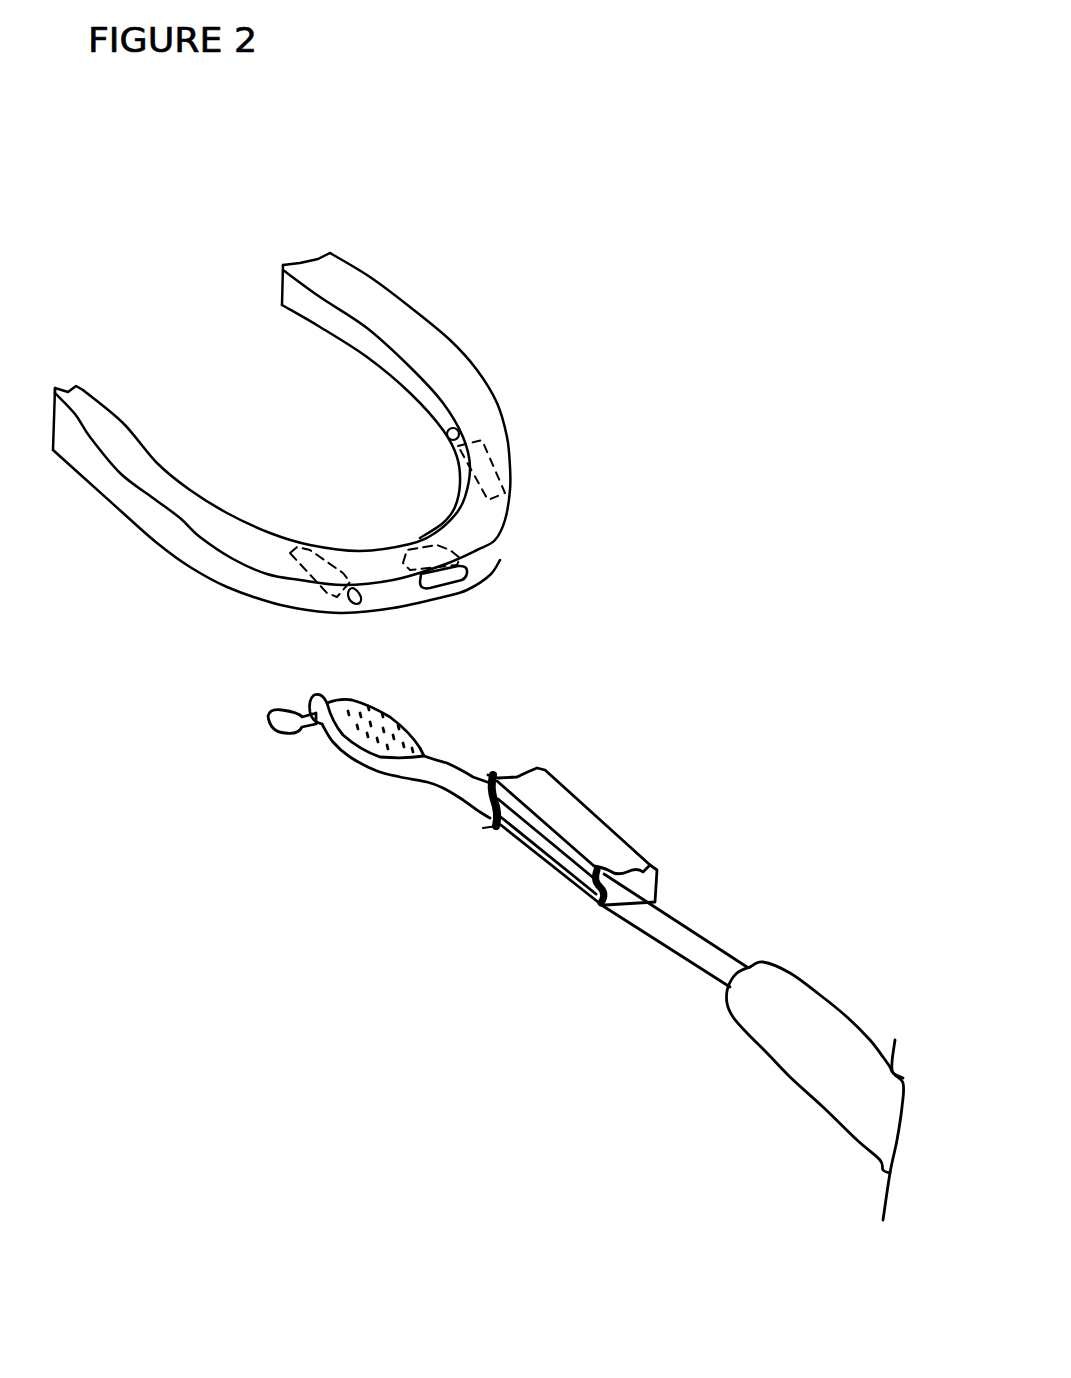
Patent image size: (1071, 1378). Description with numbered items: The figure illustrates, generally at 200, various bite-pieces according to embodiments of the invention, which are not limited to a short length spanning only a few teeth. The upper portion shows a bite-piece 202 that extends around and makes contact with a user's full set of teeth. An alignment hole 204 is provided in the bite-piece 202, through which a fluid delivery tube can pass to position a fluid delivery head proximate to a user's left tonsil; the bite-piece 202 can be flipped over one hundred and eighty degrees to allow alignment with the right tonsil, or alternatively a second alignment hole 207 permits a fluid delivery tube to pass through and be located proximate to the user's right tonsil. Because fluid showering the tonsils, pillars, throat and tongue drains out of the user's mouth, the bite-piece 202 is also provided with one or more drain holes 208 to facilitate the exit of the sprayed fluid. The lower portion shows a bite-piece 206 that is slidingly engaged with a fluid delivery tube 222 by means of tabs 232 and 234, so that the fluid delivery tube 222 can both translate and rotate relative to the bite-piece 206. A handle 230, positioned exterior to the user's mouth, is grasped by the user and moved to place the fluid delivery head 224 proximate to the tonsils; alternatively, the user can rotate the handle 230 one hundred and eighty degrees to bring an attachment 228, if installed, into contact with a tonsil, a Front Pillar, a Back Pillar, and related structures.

The bite-pieces 200 is at (637, 99).
The bite-piece 202 is at (415, 335).
The alignment hole 204 is at (487, 465).
The bite-piece 206 is at (573, 815).
The second alignment hole 207 is at (359, 606).
The drain holes 208 is at (463, 578).
The fluid delivery tube 222 is at (690, 943).
The fluid delivery head 224 is at (377, 740).
The attachment 228 is at (268, 716).
The handle 230 is at (797, 1057).
The tab 232 is at (484, 830).
The tab 234 is at (594, 902).